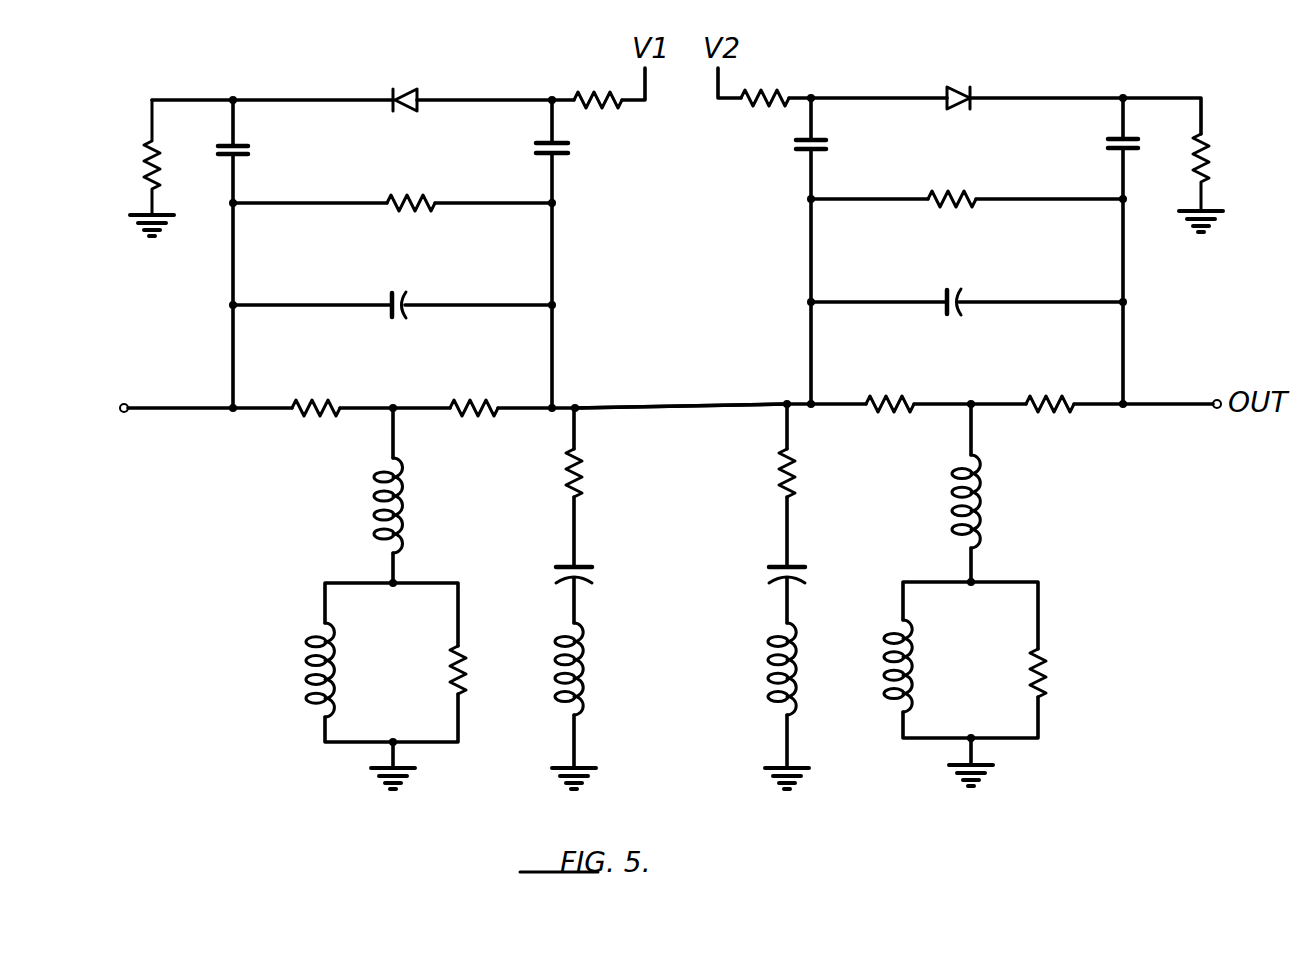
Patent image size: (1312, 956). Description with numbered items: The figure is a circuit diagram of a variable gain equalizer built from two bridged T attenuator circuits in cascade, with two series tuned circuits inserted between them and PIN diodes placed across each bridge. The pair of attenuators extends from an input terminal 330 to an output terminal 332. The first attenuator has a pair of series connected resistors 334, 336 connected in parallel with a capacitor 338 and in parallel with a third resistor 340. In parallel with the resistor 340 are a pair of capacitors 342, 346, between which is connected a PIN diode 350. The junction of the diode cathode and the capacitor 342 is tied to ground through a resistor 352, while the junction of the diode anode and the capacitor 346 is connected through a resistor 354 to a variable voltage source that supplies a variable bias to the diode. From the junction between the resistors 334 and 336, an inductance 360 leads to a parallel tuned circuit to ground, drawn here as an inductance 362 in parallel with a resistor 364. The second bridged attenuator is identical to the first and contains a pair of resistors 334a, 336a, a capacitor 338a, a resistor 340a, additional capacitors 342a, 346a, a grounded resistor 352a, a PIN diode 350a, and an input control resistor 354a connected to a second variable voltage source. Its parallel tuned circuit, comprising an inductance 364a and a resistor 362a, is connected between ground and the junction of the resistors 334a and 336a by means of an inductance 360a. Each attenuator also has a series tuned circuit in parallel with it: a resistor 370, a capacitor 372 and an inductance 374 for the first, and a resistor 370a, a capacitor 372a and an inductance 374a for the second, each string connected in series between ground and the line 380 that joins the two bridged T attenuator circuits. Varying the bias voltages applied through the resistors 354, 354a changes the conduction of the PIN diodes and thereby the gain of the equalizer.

The input terminal 330 is at (124, 413).
The output terminal 332 is at (1217, 410).
The resistor 334 is at (318, 400).
The resistor 334a is at (1038, 398).
The resistor 336 is at (462, 400).
The resistor 336a is at (890, 398).
The capacitor 338 is at (406, 292).
The capacitor 338a is at (960, 288).
The third resistor 340 is at (412, 200).
The resistor 340a is at (966, 197).
The capacitor 342 is at (250, 150).
The capacitor 342a is at (1108, 146).
The capacitor 346 is at (536, 148).
The capacitor 346a is at (827, 145).
The PIN diode 350 is at (395, 113).
The PIN diode 350a is at (950, 110).
The resistor 352 is at (148, 161).
The grounded resistor 352a is at (1206, 164).
The resistor 354 is at (598, 98).
The input control resistor 354a is at (768, 96).
The inductance 360 is at (404, 494).
The inductance 360a is at (983, 498).
The inductance 362 is at (312, 658).
The resistor 362a is at (1044, 678).
The resistor 364 is at (464, 668).
The inductance 364a is at (913, 666).
The resistor 370 is at (580, 480).
The resistor 370a is at (793, 480).
The capacitor 372 is at (580, 572).
The capacitor 372a is at (793, 572).
The inductance 374 is at (584, 668).
The inductance 374a is at (795, 666).
The line 380 is at (705, 403).